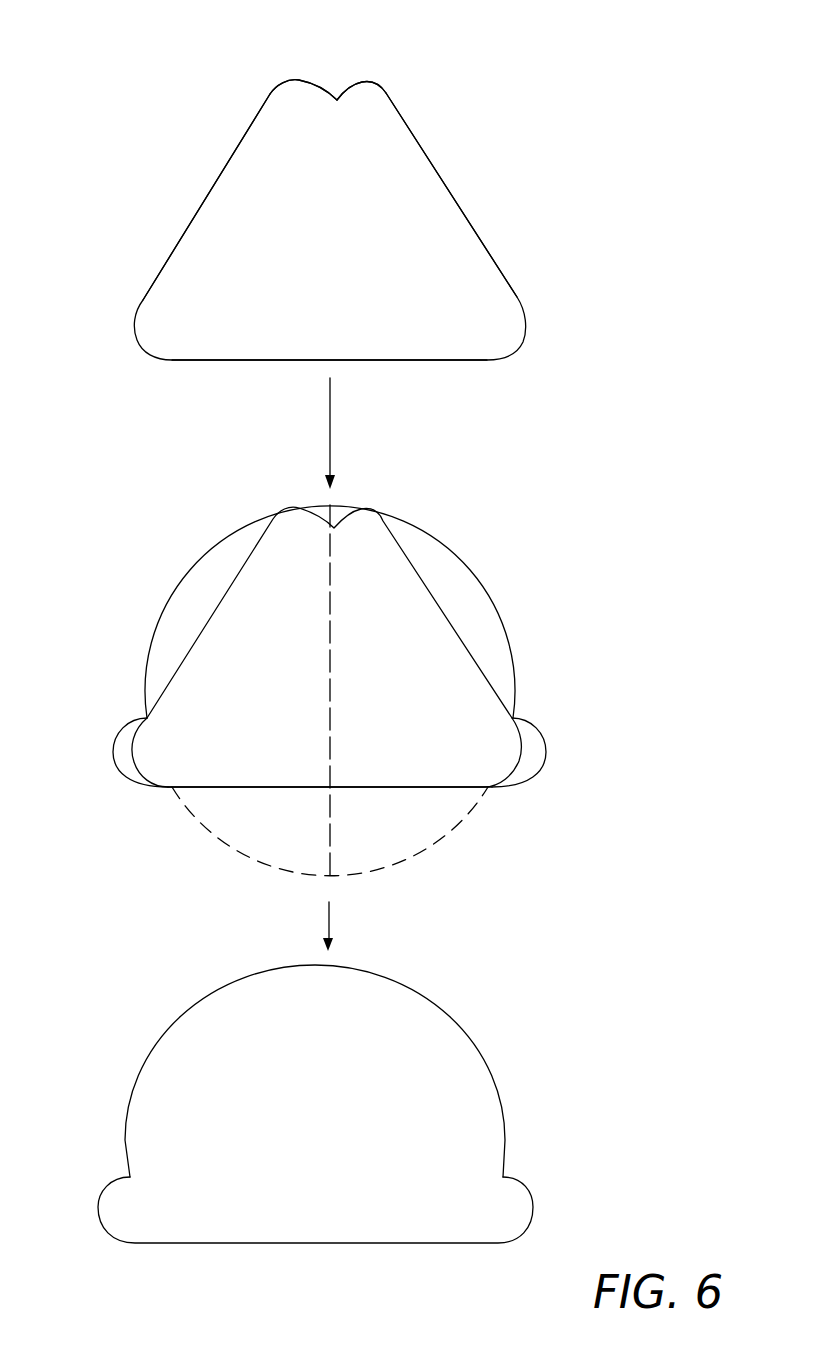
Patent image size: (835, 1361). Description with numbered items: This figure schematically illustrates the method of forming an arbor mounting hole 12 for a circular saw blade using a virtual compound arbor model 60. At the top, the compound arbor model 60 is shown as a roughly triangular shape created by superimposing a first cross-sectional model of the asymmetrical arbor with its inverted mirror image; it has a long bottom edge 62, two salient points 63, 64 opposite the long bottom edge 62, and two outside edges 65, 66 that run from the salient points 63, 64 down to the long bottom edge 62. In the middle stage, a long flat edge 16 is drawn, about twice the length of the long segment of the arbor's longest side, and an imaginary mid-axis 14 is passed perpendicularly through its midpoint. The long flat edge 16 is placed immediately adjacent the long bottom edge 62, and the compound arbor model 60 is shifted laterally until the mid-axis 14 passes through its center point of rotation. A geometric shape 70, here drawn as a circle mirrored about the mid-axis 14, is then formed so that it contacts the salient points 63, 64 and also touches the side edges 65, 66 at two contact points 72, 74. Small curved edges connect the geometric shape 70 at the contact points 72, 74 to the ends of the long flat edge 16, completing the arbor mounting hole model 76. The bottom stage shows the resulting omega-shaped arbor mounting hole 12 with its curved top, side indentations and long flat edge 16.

The arbor mounting hole 12 is at (475, 1043).
The imaginary mid-axis 14 is at (333, 578).
The long flat edge 16 is at (282, 788).
The compound arbor model 60 is at (447, 190).
The long bottom edge 62 is at (413, 362).
The salient point 63 is at (297, 76).
The salient point 64 is at (363, 83).
The outside edge 65 is at (198, 212).
The outside edge 66 is at (508, 283).
The geometric shape 70 is at (449, 827).
The contact point 72 is at (144, 719).
The contact point 74 is at (512, 720).
The arbor mounting hole model 76 is at (487, 593).